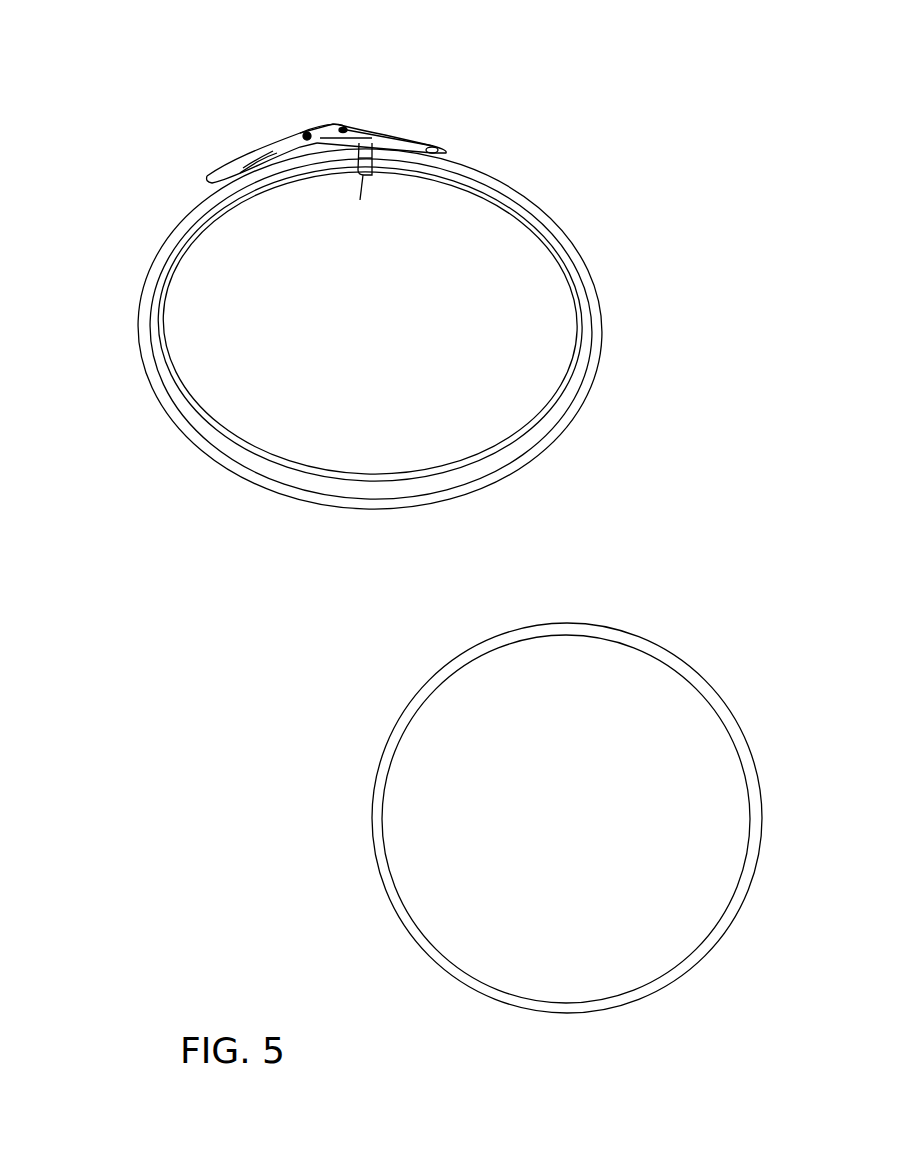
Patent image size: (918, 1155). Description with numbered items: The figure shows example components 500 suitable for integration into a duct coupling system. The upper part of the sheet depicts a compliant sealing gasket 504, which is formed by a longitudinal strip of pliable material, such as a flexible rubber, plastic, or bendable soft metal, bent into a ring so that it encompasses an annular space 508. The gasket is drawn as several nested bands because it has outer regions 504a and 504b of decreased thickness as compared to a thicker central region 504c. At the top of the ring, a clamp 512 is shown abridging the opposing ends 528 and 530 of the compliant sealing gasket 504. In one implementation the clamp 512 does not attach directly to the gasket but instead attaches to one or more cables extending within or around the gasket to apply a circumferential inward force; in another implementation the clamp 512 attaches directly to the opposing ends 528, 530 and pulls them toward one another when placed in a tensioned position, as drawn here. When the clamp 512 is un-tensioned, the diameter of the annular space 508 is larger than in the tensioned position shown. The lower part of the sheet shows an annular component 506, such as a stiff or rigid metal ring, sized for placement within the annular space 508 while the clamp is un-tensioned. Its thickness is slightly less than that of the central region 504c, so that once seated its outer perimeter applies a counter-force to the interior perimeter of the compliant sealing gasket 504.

The example components 500 is at (163, 84).
The compliant sealing gasket 504 is at (495, 164).
The outer region 504a is at (540, 210).
The outer region 504b is at (495, 197).
The central region 504c is at (554, 237).
The annular component 506 is at (657, 655).
The annular space 508 is at (383, 336).
The clamp 512 is at (352, 118).
The opposing end 528 is at (361, 172).
The opposing end 530 is at (364, 172).